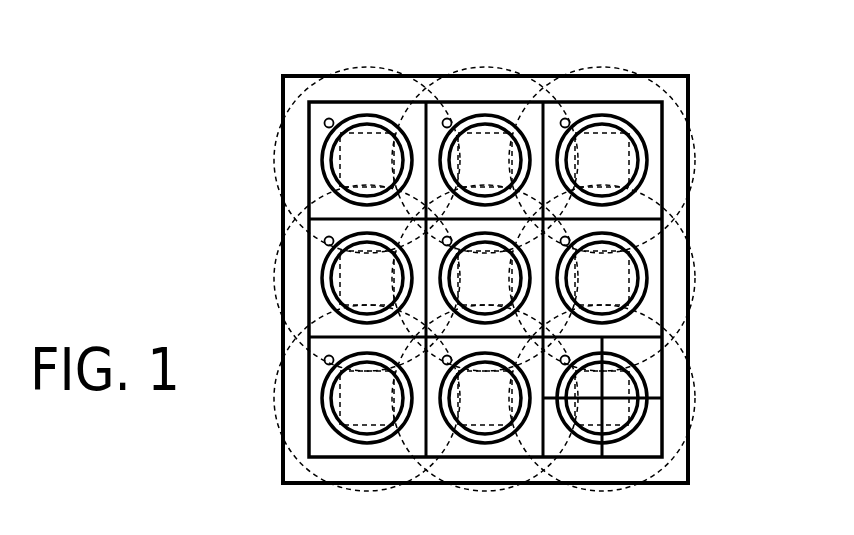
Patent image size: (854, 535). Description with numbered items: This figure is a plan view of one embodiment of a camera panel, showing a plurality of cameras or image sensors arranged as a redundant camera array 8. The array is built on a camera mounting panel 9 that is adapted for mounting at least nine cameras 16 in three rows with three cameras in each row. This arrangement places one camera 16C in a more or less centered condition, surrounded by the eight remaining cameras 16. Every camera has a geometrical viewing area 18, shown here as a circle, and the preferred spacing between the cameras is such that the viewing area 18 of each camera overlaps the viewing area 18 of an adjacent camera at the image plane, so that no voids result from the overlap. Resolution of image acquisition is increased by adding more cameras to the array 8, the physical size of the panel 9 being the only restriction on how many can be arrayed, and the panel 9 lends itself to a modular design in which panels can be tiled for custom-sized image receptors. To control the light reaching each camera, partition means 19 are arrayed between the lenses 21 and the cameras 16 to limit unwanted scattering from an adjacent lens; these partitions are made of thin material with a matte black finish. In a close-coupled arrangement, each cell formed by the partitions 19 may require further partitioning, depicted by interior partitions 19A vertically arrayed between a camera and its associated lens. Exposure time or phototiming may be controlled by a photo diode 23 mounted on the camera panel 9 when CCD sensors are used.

The redundant camera array 8 is at (200, 139).
The camera mounting panel 9 is at (282, 212).
The camera 16 is at (377, 116).
The centered camera 16C is at (450, 278).
The geometrical viewing area 18 is at (530, 78).
The partition means 19 is at (456, 100).
The interior partition 19A is at (608, 423).
The lens 21 is at (333, 143).
The photo diode 23 is at (328, 118).